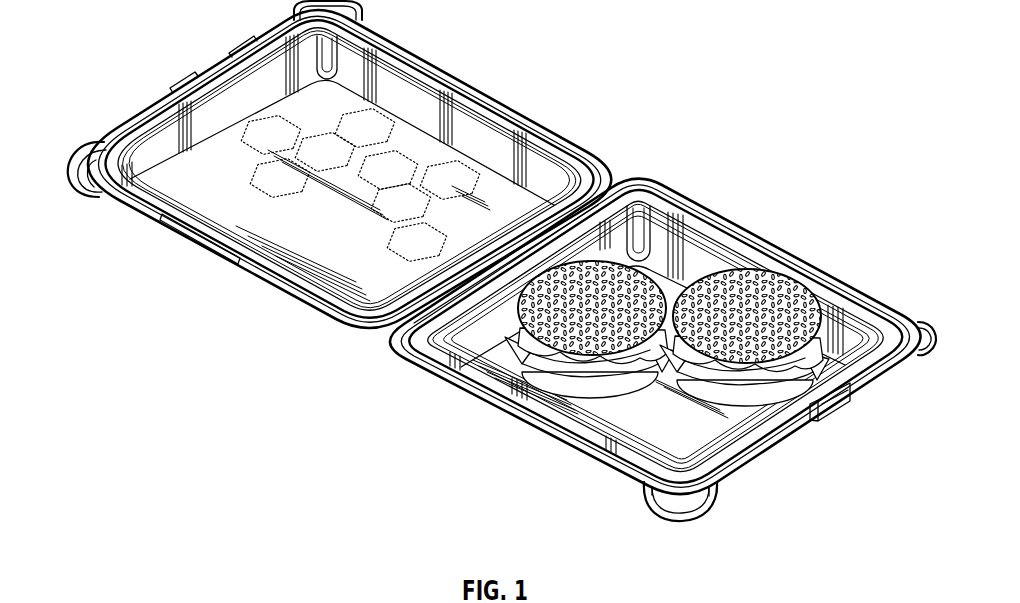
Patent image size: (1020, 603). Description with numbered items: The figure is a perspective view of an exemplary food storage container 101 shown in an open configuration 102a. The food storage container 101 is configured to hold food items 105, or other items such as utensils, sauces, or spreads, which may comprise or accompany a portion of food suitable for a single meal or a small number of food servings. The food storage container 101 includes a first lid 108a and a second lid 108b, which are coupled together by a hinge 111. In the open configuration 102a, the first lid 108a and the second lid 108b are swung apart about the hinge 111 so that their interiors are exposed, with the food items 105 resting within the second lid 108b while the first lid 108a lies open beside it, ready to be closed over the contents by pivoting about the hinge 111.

The food storage container 101 is at (760, 60).
The open configuration 102a is at (450, 434).
The food items 105 is at (595, 290).
The first lid 108a is at (492, 53).
The second lid 108b is at (818, 240).
The hinge 111 is at (612, 176).